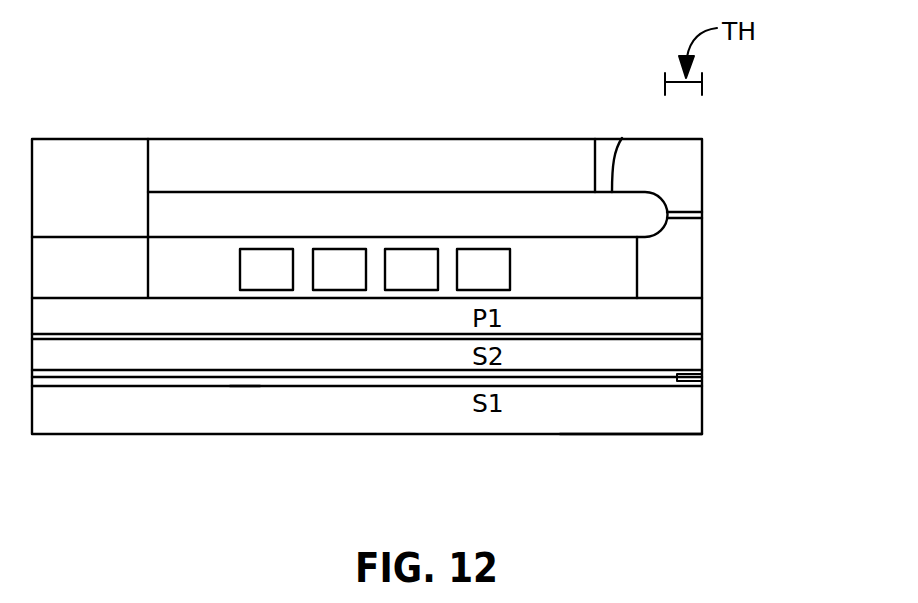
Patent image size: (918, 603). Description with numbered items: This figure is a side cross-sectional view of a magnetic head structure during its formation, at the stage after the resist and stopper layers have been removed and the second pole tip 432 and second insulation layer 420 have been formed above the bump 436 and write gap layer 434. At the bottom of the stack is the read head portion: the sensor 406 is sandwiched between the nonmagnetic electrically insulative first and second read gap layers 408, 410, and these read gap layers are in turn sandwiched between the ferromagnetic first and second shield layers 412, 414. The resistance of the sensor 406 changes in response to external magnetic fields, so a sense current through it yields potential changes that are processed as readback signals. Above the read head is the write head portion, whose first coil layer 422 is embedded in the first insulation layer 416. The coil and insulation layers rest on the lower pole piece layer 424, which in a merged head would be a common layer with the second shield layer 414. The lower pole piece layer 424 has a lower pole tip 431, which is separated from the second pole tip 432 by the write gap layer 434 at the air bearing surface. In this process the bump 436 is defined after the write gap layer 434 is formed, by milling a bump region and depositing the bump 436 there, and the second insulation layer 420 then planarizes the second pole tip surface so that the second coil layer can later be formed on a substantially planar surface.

The sensor 406 is at (703, 376).
The first read gap layer 408 is at (245, 390).
The second read gap layer 410 is at (204, 369).
The first shield layer 412 is at (620, 435).
The second shield layer 414 is at (703, 350).
The first insulation layer 416 is at (180, 290).
The second insulation layer 420 is at (503, 150).
The first coil layer 422 is at (335, 290).
The lower pole piece layer 424 is at (703, 313).
The lower pole tip 431 is at (703, 278).
The second pole tip 432 is at (703, 162).
The write gap layer 434 is at (703, 213).
The bump 436 is at (622, 138).